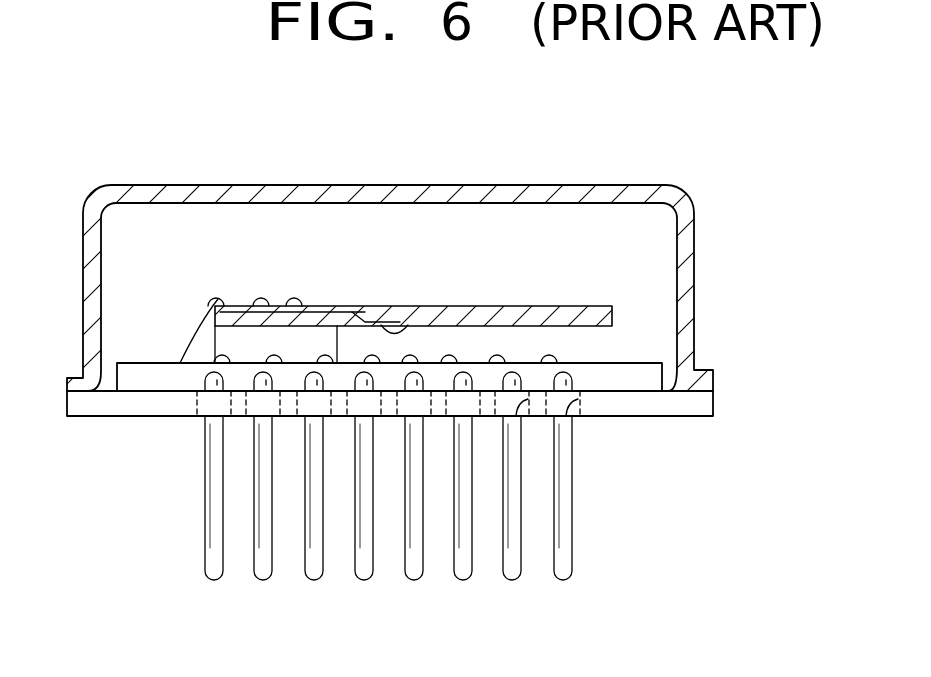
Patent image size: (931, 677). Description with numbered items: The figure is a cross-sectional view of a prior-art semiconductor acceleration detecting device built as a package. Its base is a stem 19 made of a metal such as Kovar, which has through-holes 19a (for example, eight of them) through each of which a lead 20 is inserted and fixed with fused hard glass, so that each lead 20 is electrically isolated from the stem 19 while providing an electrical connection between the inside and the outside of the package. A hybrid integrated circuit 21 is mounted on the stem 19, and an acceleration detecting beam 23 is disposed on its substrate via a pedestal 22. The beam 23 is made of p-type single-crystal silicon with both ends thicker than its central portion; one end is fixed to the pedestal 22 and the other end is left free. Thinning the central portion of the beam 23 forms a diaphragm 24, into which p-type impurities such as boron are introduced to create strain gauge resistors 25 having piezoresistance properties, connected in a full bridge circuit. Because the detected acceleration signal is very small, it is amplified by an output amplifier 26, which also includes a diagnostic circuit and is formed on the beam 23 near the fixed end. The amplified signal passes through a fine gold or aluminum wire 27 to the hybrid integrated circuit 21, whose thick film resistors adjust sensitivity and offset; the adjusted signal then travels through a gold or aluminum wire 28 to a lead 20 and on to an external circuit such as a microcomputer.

The stem 19 is at (645, 397).
The through-holes 19a is at (520, 420).
The lead 20 is at (562, 542).
The hybrid integrated circuit 21 is at (140, 378).
The pedestal 22 is at (237, 343).
The acceleration detecting beam 23 is at (518, 305).
The diaphragm 24 is at (407, 322).
The strain gauge resistors 25 is at (372, 308).
The output amplifier 26 is at (318, 303).
The gold or aluminum wire 27 is at (215, 298).
The gold or aluminum wire 28 is at (552, 360).